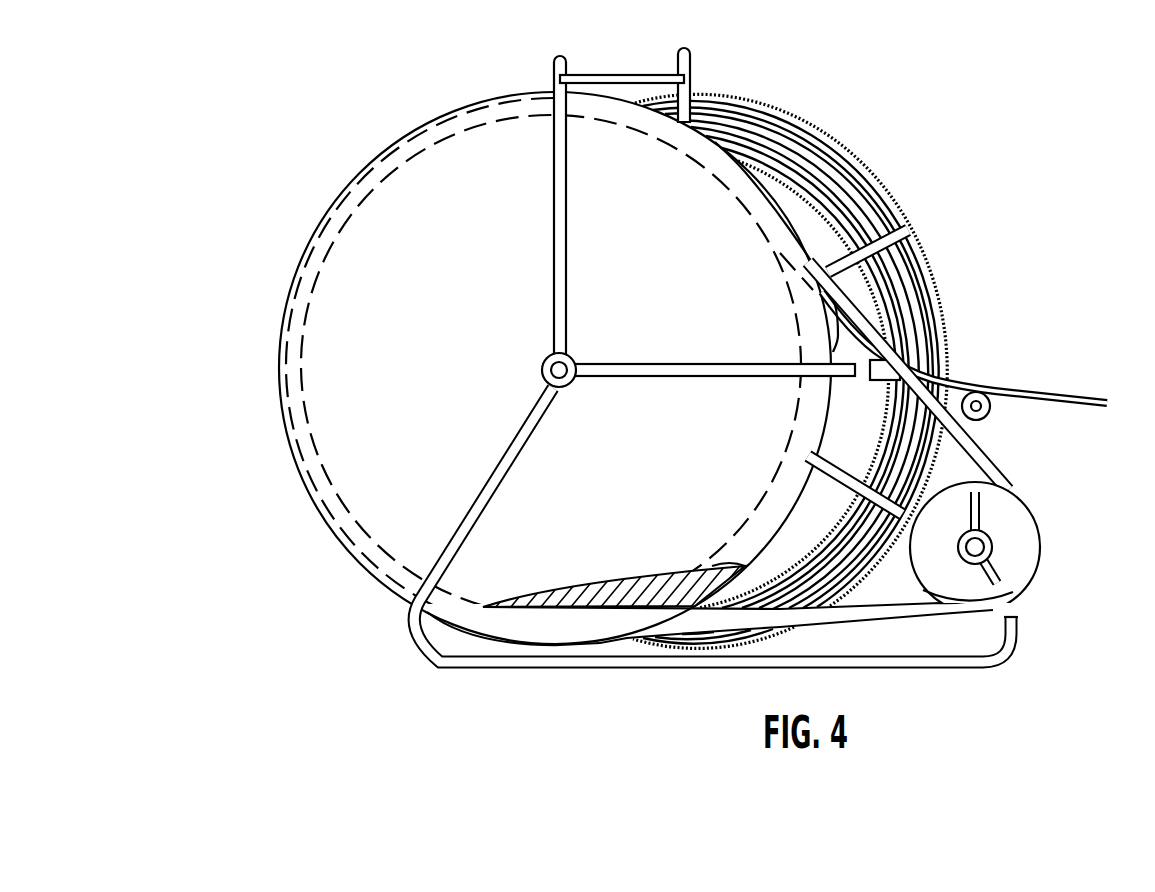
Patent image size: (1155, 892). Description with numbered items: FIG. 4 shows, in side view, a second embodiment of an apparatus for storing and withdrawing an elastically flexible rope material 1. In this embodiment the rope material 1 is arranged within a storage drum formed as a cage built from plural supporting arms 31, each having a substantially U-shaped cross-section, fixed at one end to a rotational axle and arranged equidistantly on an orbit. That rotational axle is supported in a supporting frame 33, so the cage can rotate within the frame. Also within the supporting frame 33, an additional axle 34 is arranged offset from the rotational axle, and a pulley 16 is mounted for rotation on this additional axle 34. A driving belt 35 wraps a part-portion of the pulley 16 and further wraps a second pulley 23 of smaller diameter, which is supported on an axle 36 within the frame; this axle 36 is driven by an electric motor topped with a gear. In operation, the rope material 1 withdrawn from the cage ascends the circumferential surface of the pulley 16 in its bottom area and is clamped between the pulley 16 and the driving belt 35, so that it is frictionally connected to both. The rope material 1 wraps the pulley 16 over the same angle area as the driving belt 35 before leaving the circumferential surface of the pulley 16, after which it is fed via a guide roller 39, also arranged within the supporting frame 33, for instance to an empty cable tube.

The elastically flexible rope material 1 is at (855, 175).
The pulley 16 is at (370, 237).
The second pulley 23 is at (1015, 508).
The supporting arms 31 is at (905, 240).
The supporting frame 33 is at (563, 670).
The additional axle 34 is at (548, 372).
The driving belt 35 is at (1005, 465).
The axle 36 is at (978, 548).
The guide roller 39 is at (990, 406).